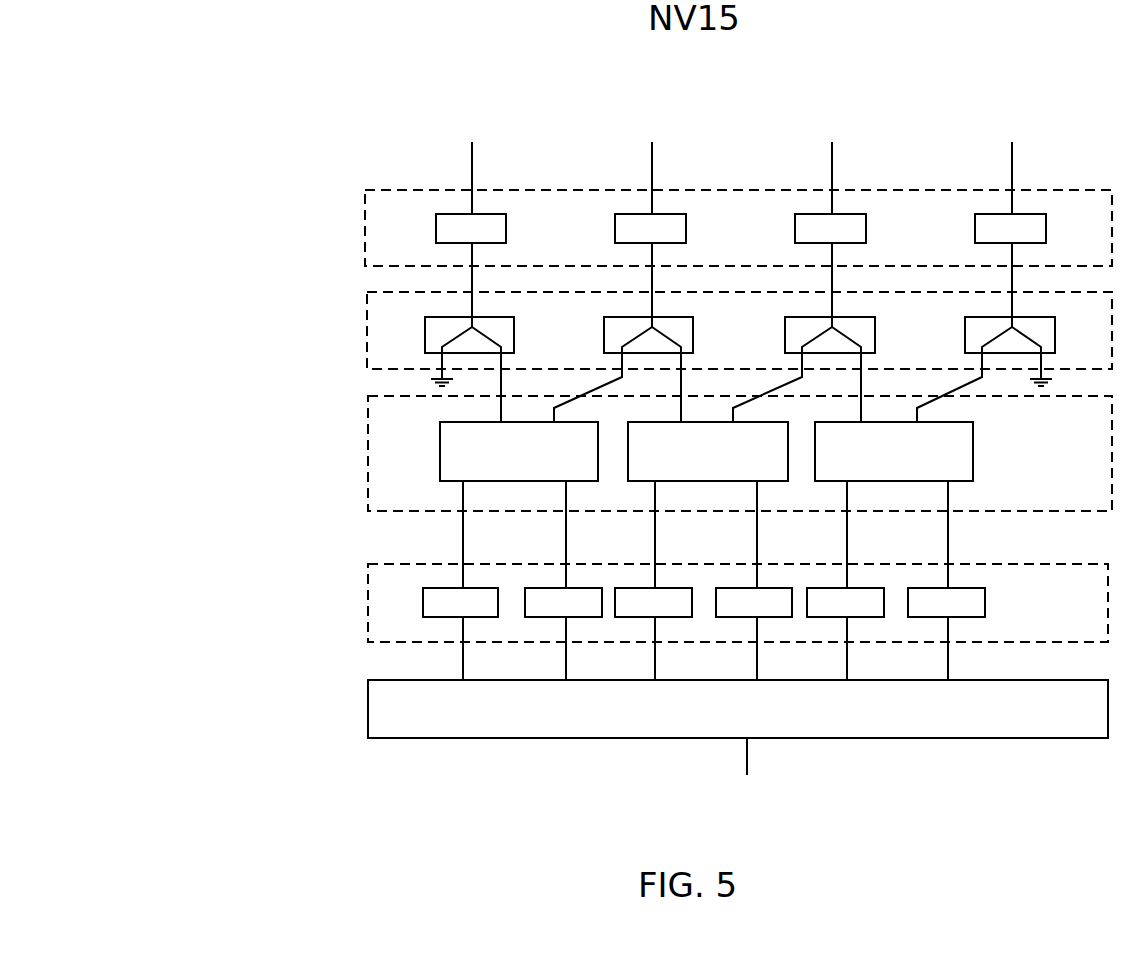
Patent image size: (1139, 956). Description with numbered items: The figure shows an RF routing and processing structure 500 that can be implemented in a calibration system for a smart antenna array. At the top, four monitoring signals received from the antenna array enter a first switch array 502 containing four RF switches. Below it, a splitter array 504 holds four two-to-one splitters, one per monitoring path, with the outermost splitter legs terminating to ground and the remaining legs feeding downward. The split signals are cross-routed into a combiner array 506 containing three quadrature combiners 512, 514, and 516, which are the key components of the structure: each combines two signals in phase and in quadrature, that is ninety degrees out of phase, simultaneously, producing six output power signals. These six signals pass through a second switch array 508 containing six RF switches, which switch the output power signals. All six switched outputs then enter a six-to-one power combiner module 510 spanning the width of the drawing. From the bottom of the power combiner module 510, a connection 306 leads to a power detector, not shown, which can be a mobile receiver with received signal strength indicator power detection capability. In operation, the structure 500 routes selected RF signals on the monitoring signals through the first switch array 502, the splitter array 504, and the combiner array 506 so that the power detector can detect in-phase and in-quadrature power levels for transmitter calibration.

The RF routing and processing structure 500 is at (205, 70).
The first switch array 502 is at (363, 215).
The splitter array 504 is at (367, 322).
The combiner array 506 is at (367, 425).
The second switch array 508 is at (367, 587).
The 6:1 power combiner module 510 is at (738, 709).
The quadrature combiner 512 is at (519, 451).
The quadrature combiner 514 is at (708, 451).
The quadrature combiner 516 is at (894, 451).
The connection 306 is at (745, 770).